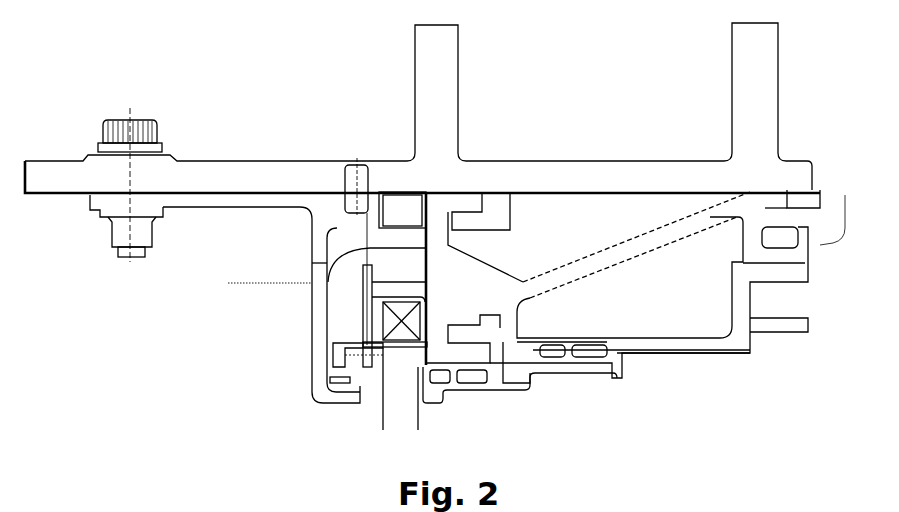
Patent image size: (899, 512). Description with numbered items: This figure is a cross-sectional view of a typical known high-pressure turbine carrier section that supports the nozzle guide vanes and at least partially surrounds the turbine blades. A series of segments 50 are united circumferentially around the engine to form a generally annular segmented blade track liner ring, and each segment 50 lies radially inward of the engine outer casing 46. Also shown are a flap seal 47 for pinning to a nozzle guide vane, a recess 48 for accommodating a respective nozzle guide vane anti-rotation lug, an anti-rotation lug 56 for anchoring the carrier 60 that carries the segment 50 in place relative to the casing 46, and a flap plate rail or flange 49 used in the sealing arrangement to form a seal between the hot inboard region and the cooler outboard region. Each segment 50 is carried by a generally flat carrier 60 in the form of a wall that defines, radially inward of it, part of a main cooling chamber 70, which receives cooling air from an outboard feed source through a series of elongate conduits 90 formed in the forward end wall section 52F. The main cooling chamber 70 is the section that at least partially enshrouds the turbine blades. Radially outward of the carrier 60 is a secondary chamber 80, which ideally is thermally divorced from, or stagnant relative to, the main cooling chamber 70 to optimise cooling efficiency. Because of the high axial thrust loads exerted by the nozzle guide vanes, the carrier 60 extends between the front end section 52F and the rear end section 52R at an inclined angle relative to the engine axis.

The engine outer casing 46 is at (352, 182).
The flap seal 47 is at (358, 377).
The recess 48 is at (425, 200).
The flap plate rail or flange 49 is at (393, 292).
The segment 50 is at (632, 397).
The forward end wall section 52F is at (437, 228).
The rear end section 52R is at (755, 238).
The anti-rotation lug 56 is at (480, 200).
The carrier 60 is at (665, 233).
The main cooling chamber 70 is at (693, 292).
The secondary chamber 80 is at (593, 233).
The elongate conduits 90 is at (550, 316).